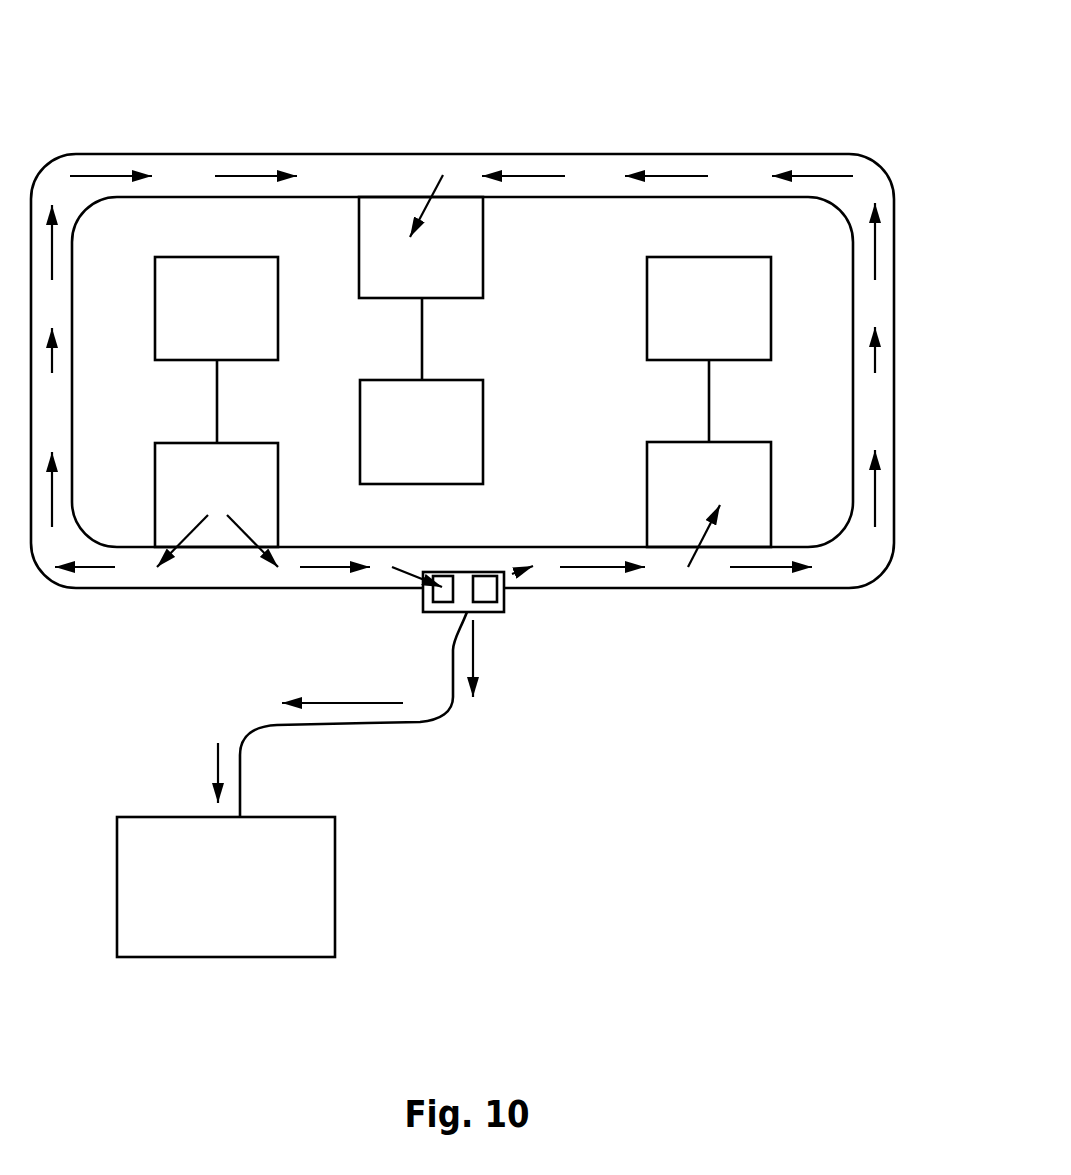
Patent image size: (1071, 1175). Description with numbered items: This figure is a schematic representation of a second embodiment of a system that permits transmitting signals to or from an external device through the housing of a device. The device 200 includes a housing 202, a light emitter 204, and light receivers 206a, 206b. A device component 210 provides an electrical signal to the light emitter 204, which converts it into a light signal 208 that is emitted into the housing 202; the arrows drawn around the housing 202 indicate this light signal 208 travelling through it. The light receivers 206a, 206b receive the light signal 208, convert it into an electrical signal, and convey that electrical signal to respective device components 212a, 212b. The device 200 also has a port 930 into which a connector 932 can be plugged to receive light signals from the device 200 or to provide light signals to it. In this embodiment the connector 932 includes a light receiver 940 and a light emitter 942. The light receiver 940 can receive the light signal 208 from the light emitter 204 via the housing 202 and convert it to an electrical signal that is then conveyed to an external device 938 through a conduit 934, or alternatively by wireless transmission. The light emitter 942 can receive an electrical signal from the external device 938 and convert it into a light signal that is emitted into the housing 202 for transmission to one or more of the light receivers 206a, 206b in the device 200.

The device 200 is at (742, 115).
The housing 202 is at (700, 154).
The light emitter 204 is at (218, 547).
The light receiver 206a is at (708, 547).
The light receiver 206b is at (380, 198).
The light signal 208 is at (763, 567).
The device component 210 is at (198, 257).
The device component 212a is at (647, 300).
The device component 212b is at (360, 380).
The port 930 is at (505, 628).
The connector 932 is at (503, 568).
The conduit 934 is at (360, 723).
The external device 938 is at (335, 927).
The light receiver 940 is at (443, 607).
The light emitter 942 is at (502, 612).